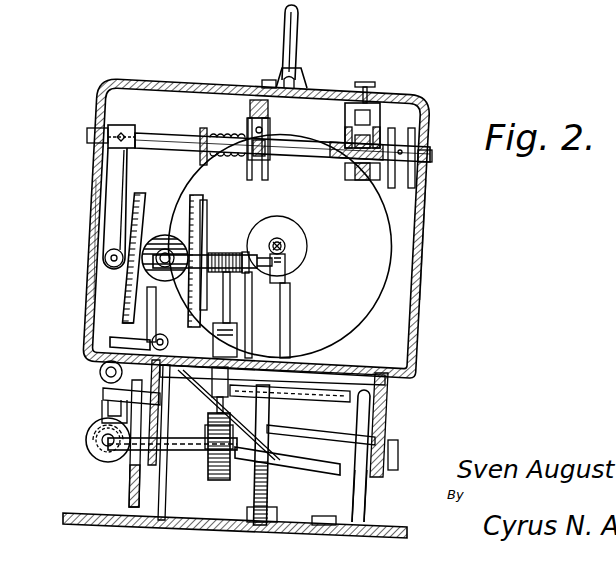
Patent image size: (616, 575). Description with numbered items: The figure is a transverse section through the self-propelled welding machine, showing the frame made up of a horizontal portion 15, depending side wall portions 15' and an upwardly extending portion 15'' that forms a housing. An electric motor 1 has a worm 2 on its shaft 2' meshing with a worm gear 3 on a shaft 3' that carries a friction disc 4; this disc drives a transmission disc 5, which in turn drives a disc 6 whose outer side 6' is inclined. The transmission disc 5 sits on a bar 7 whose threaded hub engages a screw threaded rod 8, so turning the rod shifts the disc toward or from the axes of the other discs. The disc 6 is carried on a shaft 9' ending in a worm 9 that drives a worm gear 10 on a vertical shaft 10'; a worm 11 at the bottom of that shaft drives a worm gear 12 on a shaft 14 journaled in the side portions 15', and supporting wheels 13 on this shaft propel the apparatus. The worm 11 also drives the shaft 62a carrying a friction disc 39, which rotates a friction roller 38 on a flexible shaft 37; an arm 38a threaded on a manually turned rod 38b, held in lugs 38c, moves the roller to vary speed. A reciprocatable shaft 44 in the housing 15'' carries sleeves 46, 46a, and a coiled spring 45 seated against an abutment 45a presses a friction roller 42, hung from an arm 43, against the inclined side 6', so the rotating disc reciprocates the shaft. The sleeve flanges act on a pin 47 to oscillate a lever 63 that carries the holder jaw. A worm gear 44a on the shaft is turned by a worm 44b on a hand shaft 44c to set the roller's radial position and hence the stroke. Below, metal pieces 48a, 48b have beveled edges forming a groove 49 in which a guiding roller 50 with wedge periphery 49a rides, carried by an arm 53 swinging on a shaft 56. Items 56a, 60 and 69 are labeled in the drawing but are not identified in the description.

The electric motor 1 is at (375, 262).
The worm 2 is at (279, 246).
The motor shaft 2' is at (300, 246).
The worm gear 3 is at (290, 275).
The shaft 3' is at (297, 320).
The friction disc 4 is at (200, 211).
The transmission disc 5 is at (165, 235).
The friction disc 6 is at (139, 247).
The inclined outer side 6' is at (95, 319).
The bar 7 is at (140, 332).
The screw threaded rod 8 is at (152, 342).
The worm 9 is at (215, 261).
The shaft 9' is at (171, 242).
The worm gear 10 is at (212, 247).
The vertical shaft 10' is at (244, 315).
The worm 11 is at (215, 470).
The worm gear 12 is at (215, 480).
The supporting wheels 13 is at (165, 520).
The shaft 14 is at (320, 464).
The horizontal portion of the frame 15 is at (266, 228).
The depending side wall portions 15' is at (255, 418).
The upwardly extending portion 15'' is at (257, 240).
The flexible shaft 37 is at (107, 455).
The friction roller 38 is at (95, 452).
The arm 38a is at (108, 414).
The screw threaded rod 38b is at (100, 375).
The lugs 38c is at (103, 393).
The friction disc 39 is at (130, 498).
The friction roller 42 is at (102, 262).
The arm 43 is at (118, 180).
The shaft 44 is at (172, 140).
The worm gear 44a is at (358, 182).
The worm 44b is at (355, 172).
The manually rotatable shaft 44c is at (372, 125).
The coiled spring 45 is at (222, 160).
The stationary abutment 45a is at (200, 128).
The sleeve or ring 46 is at (262, 172).
The sleeve or ring 46a is at (412, 180).
The pin 47 is at (256, 112).
The metal piece 48a is at (210, 522).
The metal piece 48b is at (320, 530).
The groove 49 is at (262, 525).
The wedge shaped periphery 49a is at (280, 450).
The guiding roller 50 is at (270, 500).
The arm 53 is at (240, 425).
The shaft 56 is at (380, 398).
The gear 56a is at (207, 430).
The bar 60 is at (296, 395).
The shaft 62a is at (133, 517).
The lever 63 is at (270, 110).
The handle 69 is at (283, 22).